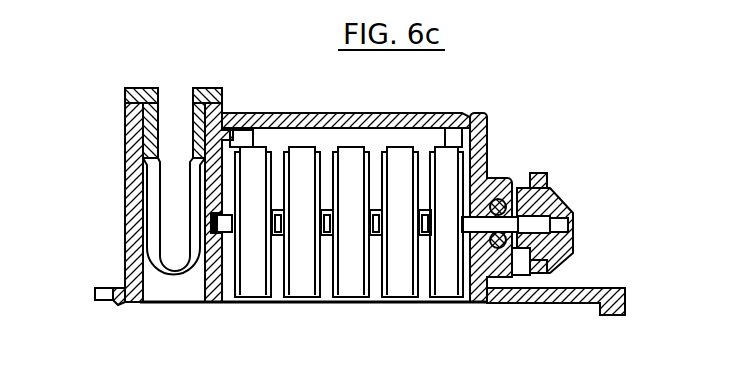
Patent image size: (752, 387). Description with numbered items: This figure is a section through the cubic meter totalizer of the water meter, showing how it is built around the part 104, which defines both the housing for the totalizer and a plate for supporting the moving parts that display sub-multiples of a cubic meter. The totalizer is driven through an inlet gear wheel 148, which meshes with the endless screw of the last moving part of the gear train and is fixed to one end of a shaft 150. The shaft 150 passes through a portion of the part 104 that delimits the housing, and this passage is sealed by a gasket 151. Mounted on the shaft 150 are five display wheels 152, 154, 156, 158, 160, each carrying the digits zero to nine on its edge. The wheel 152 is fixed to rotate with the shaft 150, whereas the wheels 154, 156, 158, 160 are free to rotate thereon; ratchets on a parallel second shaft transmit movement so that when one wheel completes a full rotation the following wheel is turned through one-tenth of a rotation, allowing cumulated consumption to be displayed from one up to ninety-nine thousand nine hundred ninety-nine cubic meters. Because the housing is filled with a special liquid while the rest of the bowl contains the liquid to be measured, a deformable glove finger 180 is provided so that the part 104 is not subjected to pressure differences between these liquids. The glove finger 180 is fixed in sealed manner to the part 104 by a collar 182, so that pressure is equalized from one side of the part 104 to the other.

The part 104 is at (125, 198).
The inlet gear wheel 148 is at (550, 208).
The shaft 150 is at (477, 190).
The gasket 151 is at (500, 272).
The display wheel 152 is at (460, 121).
The display wheel 154 is at (404, 290).
The display wheel 156 is at (355, 297).
The display wheel 158 is at (305, 297).
The display wheel 160 is at (256, 297).
The deformable glove finger 180 is at (140, 143).
The collar 182 is at (125, 93).